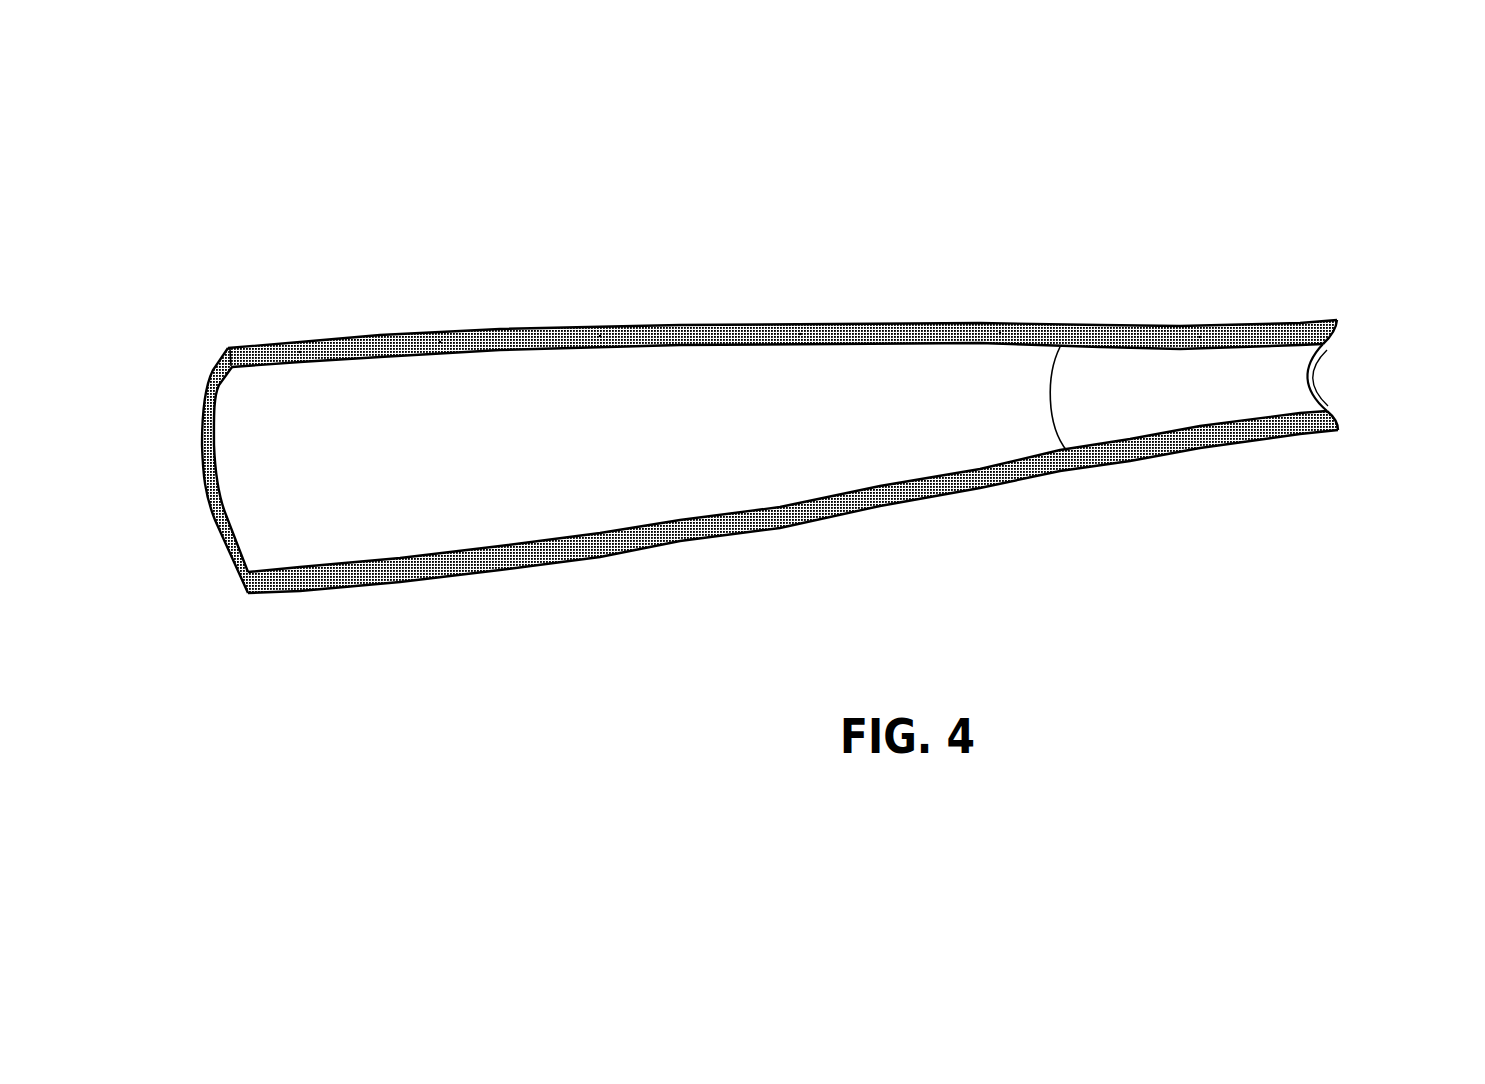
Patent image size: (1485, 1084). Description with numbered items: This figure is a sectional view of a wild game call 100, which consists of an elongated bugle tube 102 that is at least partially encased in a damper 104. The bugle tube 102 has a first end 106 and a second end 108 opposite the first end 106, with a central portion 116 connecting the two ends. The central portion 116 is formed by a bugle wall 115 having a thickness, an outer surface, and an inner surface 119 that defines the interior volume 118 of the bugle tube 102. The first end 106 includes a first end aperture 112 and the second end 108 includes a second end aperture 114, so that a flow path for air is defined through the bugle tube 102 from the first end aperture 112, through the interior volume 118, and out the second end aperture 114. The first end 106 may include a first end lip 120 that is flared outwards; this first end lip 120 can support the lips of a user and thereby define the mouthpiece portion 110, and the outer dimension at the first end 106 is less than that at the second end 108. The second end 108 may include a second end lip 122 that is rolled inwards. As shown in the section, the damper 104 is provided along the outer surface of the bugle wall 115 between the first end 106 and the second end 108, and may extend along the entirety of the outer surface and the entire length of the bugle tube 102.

The wild game call 100 is at (272, 176).
The bugle tube 102 is at (793, 517).
The damper 104 is at (523, 557).
The first end 106 is at (1323, 387).
The second end 108 is at (217, 372).
The mouthpiece portion 110 is at (1313, 353).
The first end aperture 112 is at (1332, 406).
The second end aperture 114 is at (249, 527).
The bugle wall 115 is at (545, 367).
The central portion 116 is at (865, 347).
The interior volume 118 is at (658, 367).
The inner surface 119 is at (485, 365).
The first end lip 120 is at (1330, 423).
The second end lip 122 is at (228, 360).